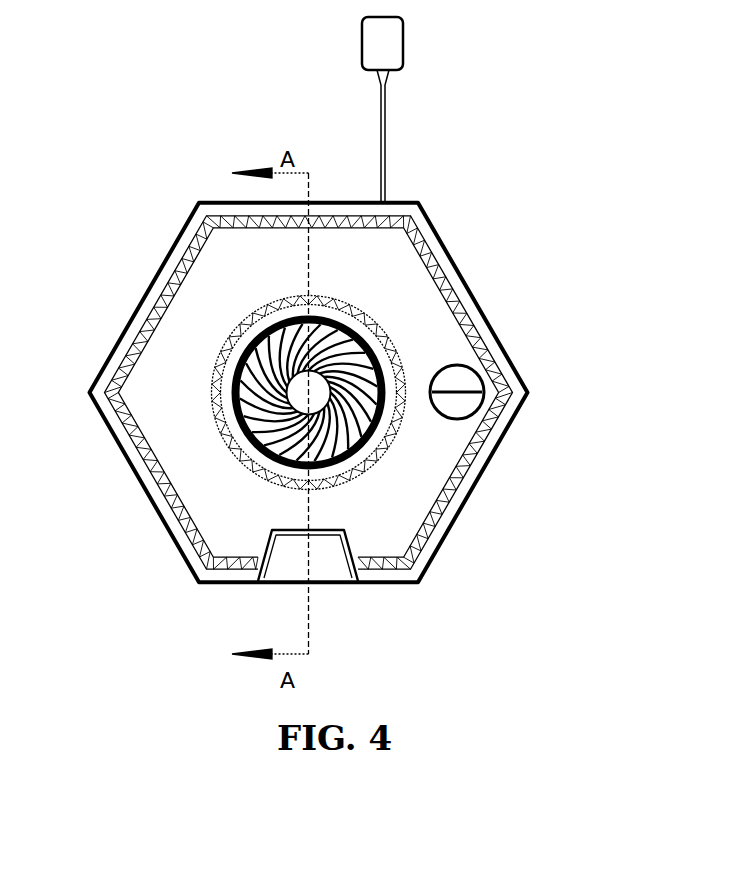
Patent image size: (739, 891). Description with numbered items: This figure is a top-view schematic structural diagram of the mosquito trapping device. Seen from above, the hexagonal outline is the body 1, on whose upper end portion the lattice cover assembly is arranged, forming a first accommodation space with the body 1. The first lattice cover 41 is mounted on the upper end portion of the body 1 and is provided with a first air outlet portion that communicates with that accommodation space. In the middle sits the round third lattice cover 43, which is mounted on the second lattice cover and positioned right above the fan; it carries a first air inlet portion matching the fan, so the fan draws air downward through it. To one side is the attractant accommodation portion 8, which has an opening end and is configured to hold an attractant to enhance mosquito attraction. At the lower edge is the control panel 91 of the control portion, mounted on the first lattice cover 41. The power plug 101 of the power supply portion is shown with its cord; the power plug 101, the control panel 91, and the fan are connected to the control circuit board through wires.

The body 1 is at (117, 338).
The first lattice cover 41 is at (157, 422).
The third lattice cover 43 is at (247, 340).
The attractant accommodation portion 8 is at (463, 382).
The control panel 91 is at (338, 570).
The power plug 101 is at (363, 43).